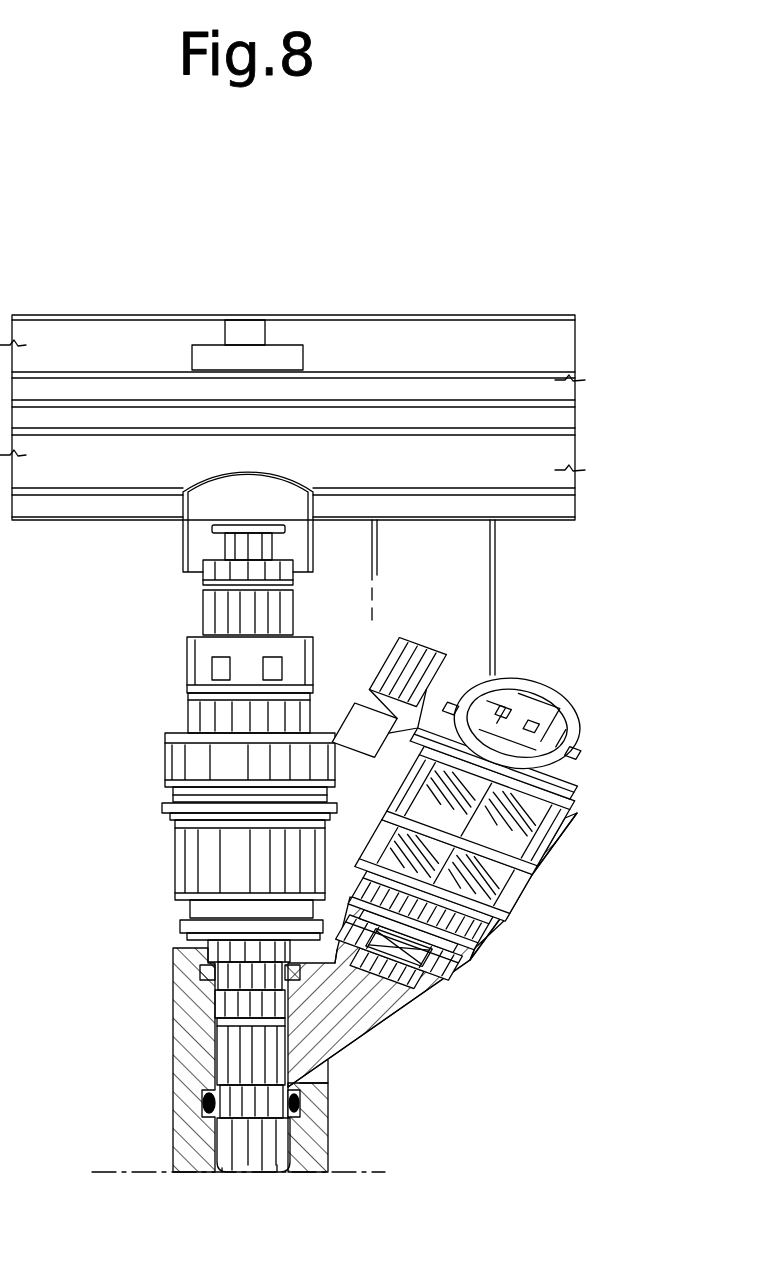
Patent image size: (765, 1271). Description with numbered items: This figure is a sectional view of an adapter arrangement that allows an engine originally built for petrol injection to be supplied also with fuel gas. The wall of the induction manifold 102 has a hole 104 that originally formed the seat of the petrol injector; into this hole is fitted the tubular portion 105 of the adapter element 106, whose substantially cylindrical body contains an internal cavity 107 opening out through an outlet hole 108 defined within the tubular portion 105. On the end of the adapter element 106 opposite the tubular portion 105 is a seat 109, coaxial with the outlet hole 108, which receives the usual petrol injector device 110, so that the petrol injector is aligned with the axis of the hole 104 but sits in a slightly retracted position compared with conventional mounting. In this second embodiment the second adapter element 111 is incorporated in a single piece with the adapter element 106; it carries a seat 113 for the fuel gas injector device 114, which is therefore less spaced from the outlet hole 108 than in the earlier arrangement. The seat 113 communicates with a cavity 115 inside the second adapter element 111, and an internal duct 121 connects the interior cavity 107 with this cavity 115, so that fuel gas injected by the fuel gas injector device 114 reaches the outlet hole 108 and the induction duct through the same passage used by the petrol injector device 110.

The induction manifold 102 is at (322, 1140).
The hole 104 is at (227, 1173).
The tubular portion 105 is at (203, 1098).
The adapter element 106 is at (165, 983).
The internal cavity 107 is at (222, 1043).
The outlet hole 108 is at (277, 1173).
The seat 109 is at (187, 928).
The petrol injector device 110 is at (187, 862).
The second adapter element 111 is at (483, 947).
The seat 113 is at (483, 897).
The fuel gas injector device 114 is at (475, 825).
The cavity 115 is at (410, 988).
The internal duct 121 is at (323, 1015).